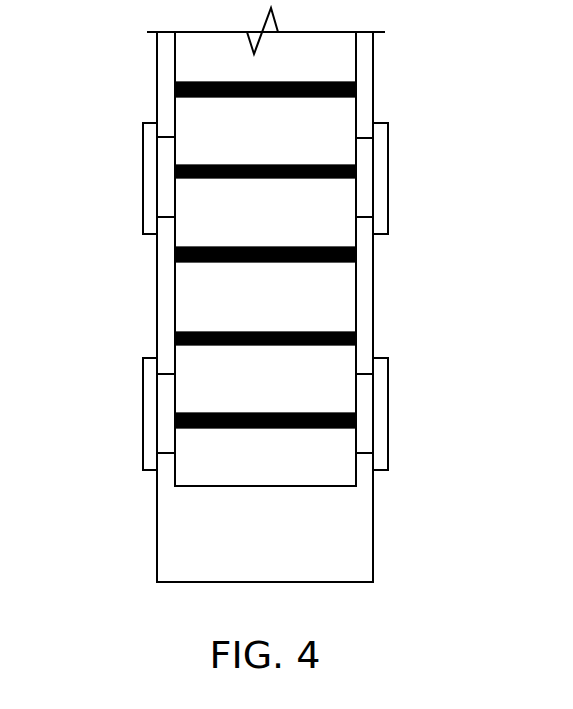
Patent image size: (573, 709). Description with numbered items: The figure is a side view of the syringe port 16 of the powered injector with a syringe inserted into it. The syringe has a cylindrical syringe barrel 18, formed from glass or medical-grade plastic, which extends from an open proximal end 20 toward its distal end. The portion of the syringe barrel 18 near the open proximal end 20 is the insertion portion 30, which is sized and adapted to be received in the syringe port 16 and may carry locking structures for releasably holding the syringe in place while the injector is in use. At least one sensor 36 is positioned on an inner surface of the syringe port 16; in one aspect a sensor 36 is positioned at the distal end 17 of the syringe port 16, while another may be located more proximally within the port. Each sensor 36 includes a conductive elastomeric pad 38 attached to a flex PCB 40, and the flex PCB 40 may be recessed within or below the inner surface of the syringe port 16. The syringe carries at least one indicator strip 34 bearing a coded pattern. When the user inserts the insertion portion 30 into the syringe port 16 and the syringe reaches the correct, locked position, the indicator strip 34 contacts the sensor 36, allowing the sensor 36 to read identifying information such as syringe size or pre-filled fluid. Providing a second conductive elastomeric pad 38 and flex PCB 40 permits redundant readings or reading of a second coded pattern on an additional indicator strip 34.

The syringe port 16 is at (350, 557).
The distal end 17 is at (386, 49).
The syringe barrel 18 is at (190, 297).
The open proximal end 20 is at (205, 487).
The insertion portion 30 is at (98, 48).
The indicator strip 34 is at (332, 262).
The sensor 36 is at (302, 291).
The conductive elastomeric pad 38 is at (365, 189).
The flex PCB 40 is at (377, 225).